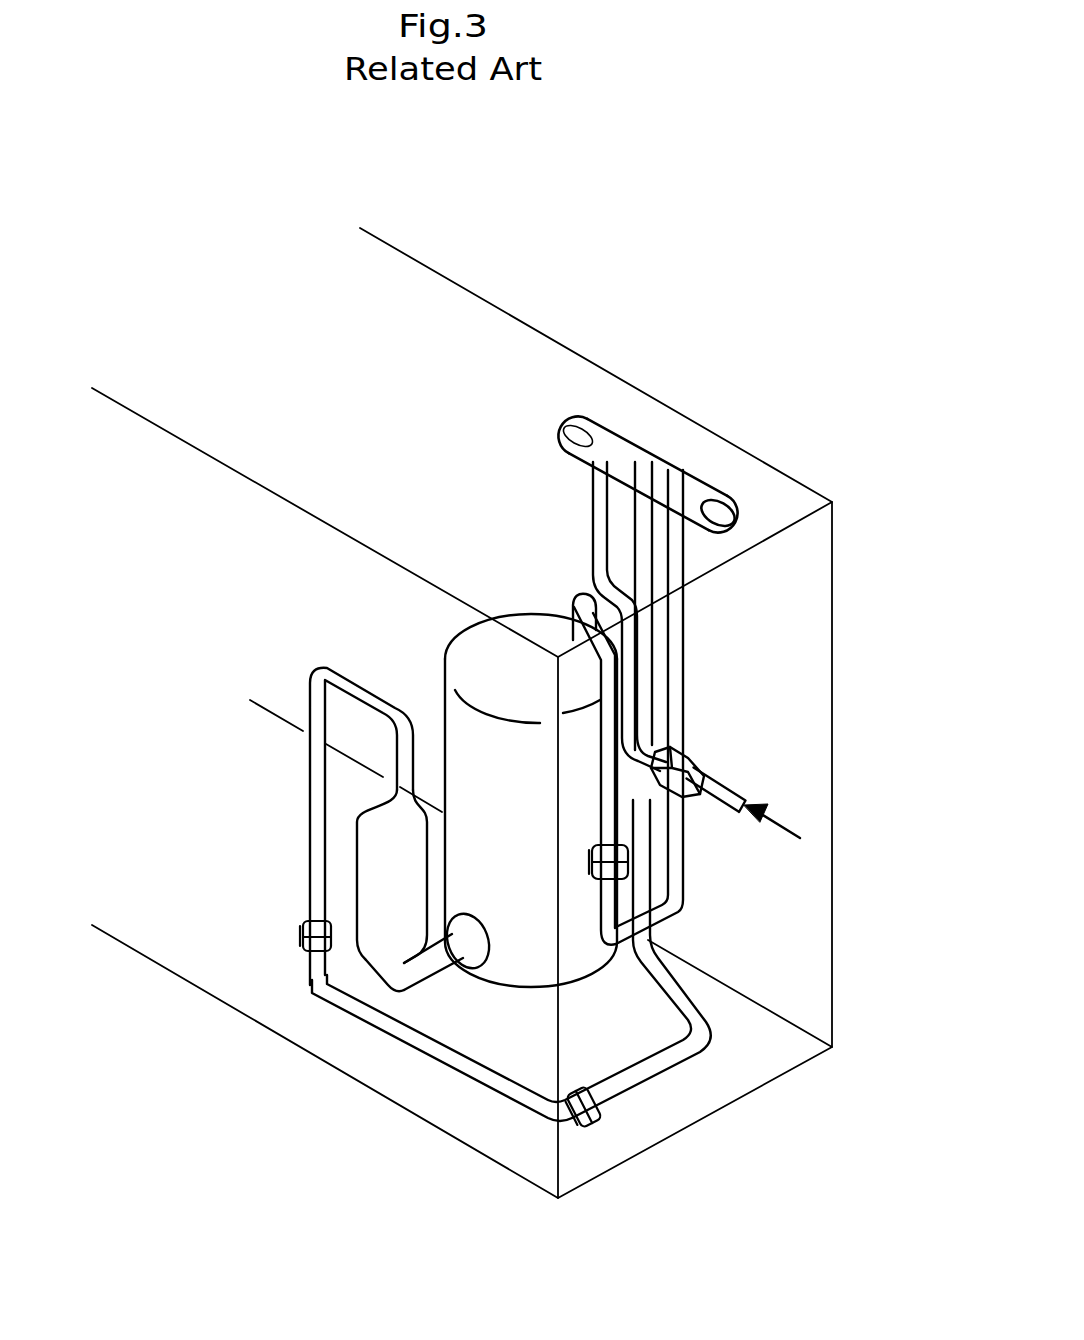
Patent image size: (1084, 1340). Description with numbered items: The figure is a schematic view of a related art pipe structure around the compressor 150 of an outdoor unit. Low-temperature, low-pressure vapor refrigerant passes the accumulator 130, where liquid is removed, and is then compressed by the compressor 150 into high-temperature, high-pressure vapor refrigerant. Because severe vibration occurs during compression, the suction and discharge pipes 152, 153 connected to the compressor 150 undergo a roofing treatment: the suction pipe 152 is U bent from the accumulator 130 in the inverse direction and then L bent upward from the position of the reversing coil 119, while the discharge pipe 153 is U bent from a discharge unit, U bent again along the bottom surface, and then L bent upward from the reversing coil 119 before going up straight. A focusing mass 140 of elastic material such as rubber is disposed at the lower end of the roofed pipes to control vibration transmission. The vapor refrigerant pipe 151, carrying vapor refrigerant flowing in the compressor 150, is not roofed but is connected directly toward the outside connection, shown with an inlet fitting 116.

The refrigerant inlet connector 116 is at (690, 760).
The reversing coil 119 is at (623, 447).
The accumulator 130 is at (373, 867).
The focusing mass 140 is at (303, 935).
The compressor 150 is at (512, 663).
The vapor refrigerant pipe 151 is at (627, 740).
The suction pipe 152 is at (453, 1070).
The discharge pipe 153 is at (590, 608).